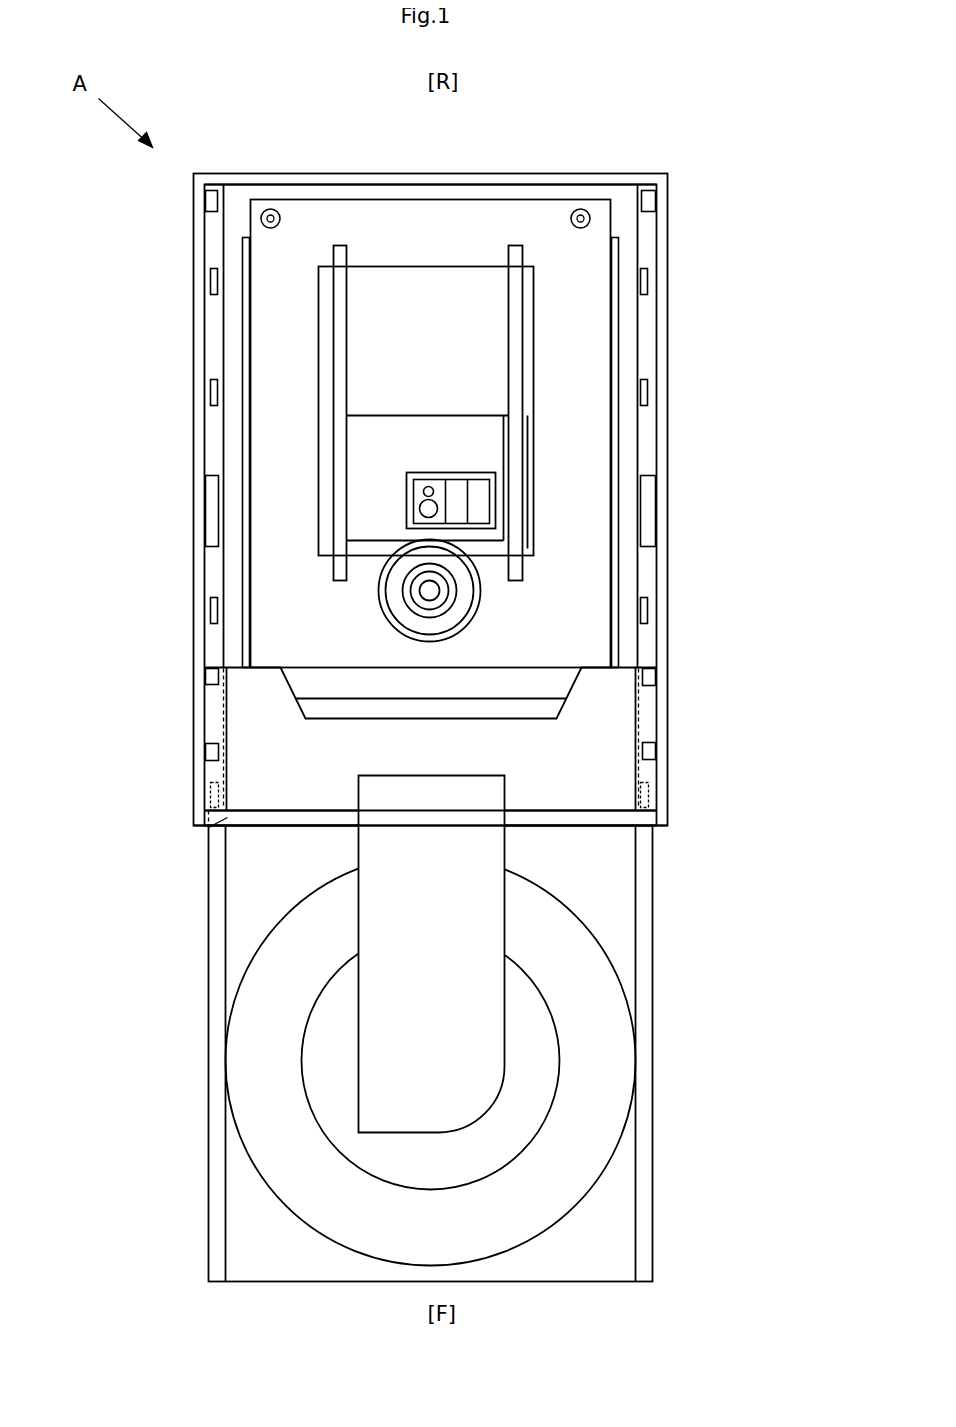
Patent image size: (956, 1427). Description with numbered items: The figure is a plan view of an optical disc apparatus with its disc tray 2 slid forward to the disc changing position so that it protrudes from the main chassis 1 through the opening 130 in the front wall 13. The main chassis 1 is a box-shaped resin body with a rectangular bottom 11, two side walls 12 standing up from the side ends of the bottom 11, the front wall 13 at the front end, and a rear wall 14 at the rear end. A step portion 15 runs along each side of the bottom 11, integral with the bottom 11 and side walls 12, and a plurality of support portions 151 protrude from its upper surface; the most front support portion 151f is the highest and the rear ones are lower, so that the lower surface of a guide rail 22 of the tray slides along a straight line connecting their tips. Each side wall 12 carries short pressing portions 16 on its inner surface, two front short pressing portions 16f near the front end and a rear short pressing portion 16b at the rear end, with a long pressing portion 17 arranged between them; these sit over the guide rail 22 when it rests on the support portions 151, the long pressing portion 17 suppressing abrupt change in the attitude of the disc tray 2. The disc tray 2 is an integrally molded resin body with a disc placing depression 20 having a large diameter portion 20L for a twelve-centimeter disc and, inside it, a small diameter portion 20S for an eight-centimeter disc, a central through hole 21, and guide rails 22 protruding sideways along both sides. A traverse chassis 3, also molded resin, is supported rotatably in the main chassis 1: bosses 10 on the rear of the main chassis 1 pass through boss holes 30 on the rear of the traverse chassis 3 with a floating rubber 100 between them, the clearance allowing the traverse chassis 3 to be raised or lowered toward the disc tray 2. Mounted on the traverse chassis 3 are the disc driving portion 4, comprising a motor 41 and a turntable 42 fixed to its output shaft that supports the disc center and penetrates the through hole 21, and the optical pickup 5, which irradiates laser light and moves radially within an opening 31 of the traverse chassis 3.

The main chassis 1 is at (222, 178).
The disc tray 2 is at (438, 1029).
The traverse chassis 3 is at (377, 217).
The disc driving portion 4 is at (445, 610).
The optical pickup 5 is at (392, 485).
The boss 10 is at (467, 158).
The bottom 11 is at (625, 228).
The side wall 12 is at (198, 449).
The front wall 13 is at (640, 815).
The rear wall 14 is at (479, 182).
The step portion 15 is at (211, 241).
The short pressing portion 16 is at (446, 471).
The rear short pressing portion 16b is at (209, 204).
The front short pressing portion 16f is at (210, 675).
The long pressing portion 17 is at (213, 503).
The disc placing depression 20 is at (438, 1061).
The large diameter portion 20L is at (258, 1110).
The small diameter portion 20S is at (330, 1103).
The through hole 21 is at (358, 943).
The guide rail 22 is at (217, 1027).
The boss hole 30 is at (280, 213).
The opening 31 is at (412, 265).
The motor 41 is at (460, 632).
The turntable 42 is at (403, 613).
The floating rubber 100 is at (276, 209).
The opening 130 is at (205, 828).
The support portion 151 is at (213, 281).
The most front support portion 151f is at (209, 795).